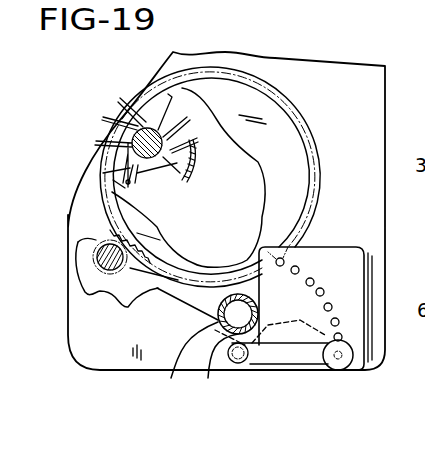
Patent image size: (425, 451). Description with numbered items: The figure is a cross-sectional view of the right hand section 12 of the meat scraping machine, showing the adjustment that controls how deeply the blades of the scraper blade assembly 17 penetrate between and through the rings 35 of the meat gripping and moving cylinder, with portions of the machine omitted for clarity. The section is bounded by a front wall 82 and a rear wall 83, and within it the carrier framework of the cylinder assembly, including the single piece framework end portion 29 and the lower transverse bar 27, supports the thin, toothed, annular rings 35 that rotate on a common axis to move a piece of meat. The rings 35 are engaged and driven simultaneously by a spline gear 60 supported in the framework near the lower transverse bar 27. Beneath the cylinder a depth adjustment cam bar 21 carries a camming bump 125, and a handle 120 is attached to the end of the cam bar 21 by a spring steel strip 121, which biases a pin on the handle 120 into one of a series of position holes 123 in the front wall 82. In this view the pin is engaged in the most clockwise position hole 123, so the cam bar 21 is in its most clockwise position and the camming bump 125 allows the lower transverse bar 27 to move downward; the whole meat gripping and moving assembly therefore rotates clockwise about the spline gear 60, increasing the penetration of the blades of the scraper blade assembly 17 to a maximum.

The right hand section 12 is at (298, 46).
The rear wall 83 is at (356, 75).
The framework end portion 29 is at (277, 128).
The scraper blade assembly 17 is at (150, 116).
The rings 35 is at (108, 240).
The spline gear 60 is at (97, 262).
The lower transverse bar 27 is at (173, 370).
The depth adjustment cam bar 21 is at (211, 370).
The front wall 82 is at (378, 258).
The position holes 123 is at (330, 305).
The camming bump 125 is at (270, 323).
The spring steel strip 121 is at (280, 360).
The handle 120 is at (341, 370).